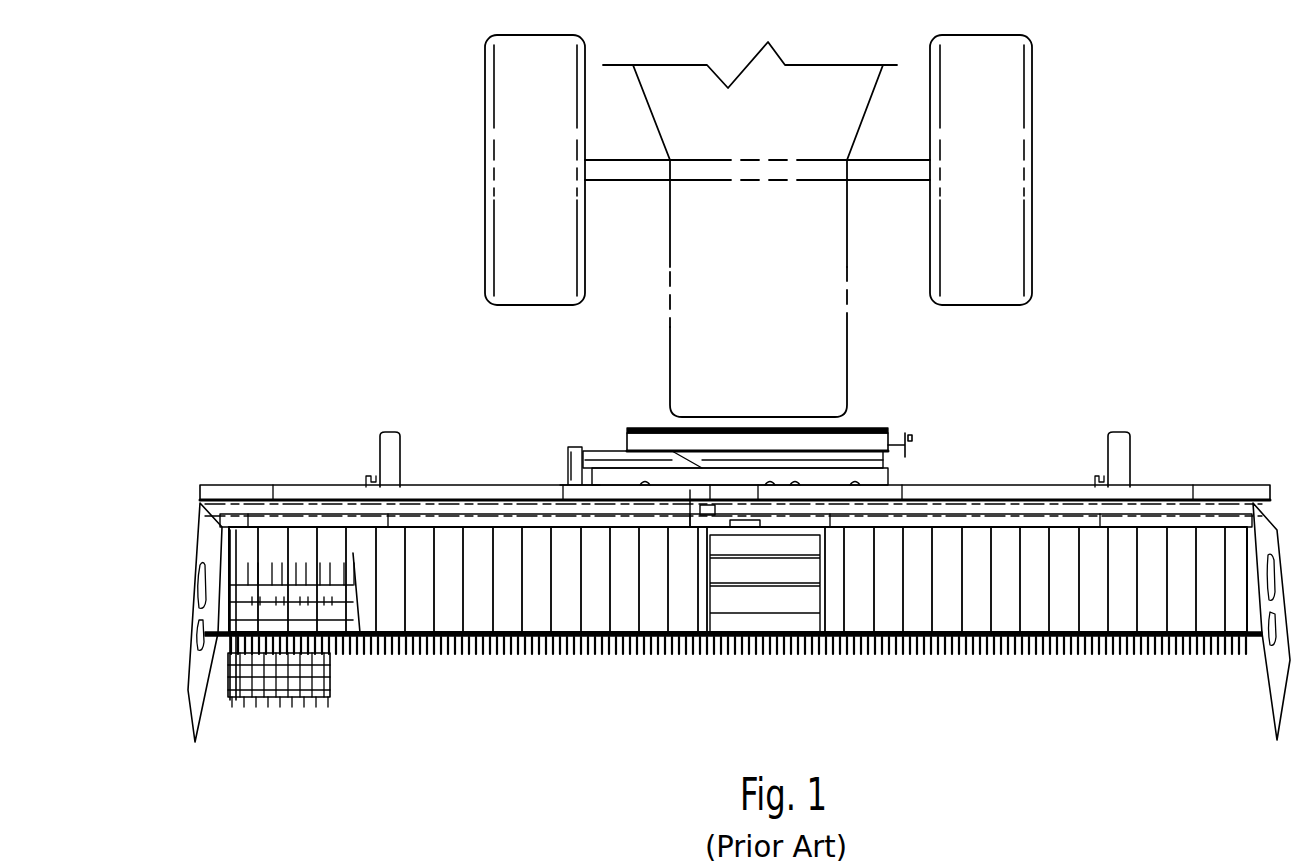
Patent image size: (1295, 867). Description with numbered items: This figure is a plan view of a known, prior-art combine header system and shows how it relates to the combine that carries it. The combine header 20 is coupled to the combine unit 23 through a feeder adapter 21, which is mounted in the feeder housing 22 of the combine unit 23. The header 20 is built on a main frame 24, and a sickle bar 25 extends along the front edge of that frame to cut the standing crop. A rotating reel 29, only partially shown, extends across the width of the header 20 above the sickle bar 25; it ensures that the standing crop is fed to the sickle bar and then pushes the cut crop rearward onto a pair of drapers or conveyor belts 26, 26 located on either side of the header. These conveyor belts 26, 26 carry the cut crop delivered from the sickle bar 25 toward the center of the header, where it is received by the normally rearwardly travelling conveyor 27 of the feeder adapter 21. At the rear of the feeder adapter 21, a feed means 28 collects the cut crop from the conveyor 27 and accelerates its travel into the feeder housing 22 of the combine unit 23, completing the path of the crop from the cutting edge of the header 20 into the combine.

The combine header 20 is at (496, 478).
The feeder adapter 21 is at (875, 427).
The feeder housing 22 is at (848, 345).
The combine unit 23 is at (656, 275).
The main frame 24 is at (1148, 495).
The sickle bar 25 is at (468, 655).
The drapers or conveyor belts 26 is at (580, 605).
The conveyor 27 is at (768, 613).
The feed means 28 is at (697, 453).
The rotating reel 29 is at (277, 687).